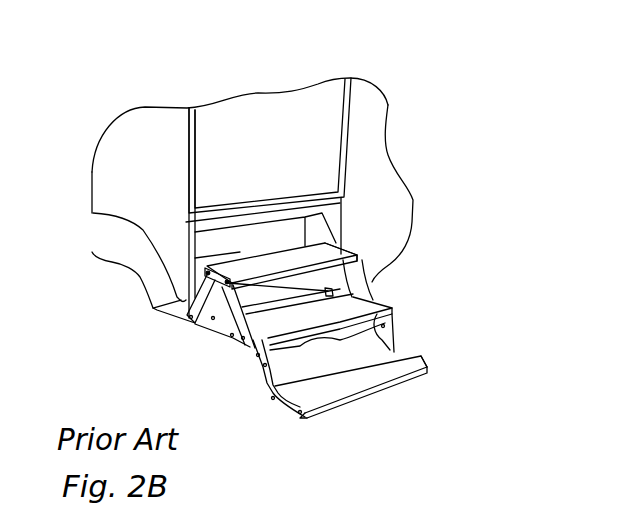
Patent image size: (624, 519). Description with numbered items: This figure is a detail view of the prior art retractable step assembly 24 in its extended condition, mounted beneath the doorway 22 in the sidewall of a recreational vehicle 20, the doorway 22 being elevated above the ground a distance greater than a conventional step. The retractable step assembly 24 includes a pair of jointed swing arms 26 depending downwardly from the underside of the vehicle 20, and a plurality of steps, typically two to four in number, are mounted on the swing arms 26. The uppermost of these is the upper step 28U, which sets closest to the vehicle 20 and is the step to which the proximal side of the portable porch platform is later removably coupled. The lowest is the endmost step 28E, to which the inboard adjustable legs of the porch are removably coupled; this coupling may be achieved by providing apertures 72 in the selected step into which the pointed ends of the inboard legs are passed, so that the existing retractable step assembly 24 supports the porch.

The recreational vehicle 20 is at (388, 103).
The doorway 22 is at (268, 117).
The retractable step assembly 24 is at (372, 281).
The jointed swing arms 26 is at (228, 327).
The upper step 28U is at (344, 250).
The endmost step 28E is at (400, 355).
The apertures 72 is at (307, 403).